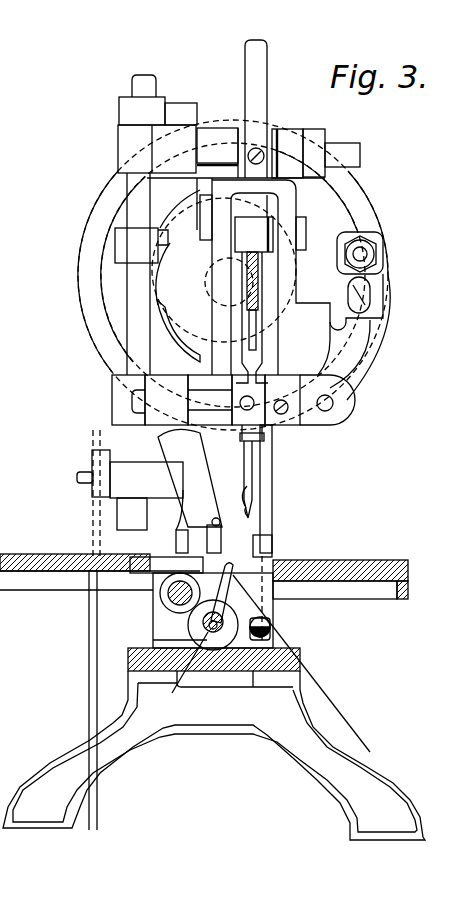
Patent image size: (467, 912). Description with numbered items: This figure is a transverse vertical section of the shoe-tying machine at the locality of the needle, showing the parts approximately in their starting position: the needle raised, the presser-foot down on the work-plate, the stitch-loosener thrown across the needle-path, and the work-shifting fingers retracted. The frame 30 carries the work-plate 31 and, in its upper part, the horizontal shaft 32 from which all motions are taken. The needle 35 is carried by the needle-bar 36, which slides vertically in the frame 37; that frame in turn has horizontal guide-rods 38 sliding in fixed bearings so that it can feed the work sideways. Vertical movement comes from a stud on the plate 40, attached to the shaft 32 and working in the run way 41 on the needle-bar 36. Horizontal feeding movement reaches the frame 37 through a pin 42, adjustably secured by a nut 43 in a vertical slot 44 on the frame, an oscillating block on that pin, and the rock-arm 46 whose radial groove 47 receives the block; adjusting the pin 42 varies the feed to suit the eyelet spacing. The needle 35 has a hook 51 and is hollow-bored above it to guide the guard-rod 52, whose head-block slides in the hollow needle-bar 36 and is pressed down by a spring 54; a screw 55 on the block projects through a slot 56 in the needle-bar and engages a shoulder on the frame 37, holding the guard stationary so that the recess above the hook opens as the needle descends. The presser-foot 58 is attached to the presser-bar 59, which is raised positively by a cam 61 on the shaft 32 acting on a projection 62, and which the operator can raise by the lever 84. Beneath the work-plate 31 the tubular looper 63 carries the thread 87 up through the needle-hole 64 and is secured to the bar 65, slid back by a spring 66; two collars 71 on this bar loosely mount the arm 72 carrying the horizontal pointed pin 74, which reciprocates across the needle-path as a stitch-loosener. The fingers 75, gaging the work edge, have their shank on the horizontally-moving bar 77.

The frame 30 is at (288, 692).
The work-plate 31 is at (147, 560).
The horizontal shaft 32 is at (240, 303).
The needle 35 is at (253, 470).
The needle-bar 36 is at (252, 62).
The frame 37 is at (286, 203).
The horizontal guide-rods 38 is at (219, 147).
The plate 40 is at (180, 273).
The guide or run way 41 is at (300, 227).
The pin 42 is at (361, 254).
The nut 43 is at (376, 258).
The vertical slot 44 is at (350, 320).
The rock-arm 46 is at (335, 372).
The radial groove 47 is at (345, 333).
The hook 51 is at (250, 506).
The guard-rod 52 is at (250, 492).
The spring 54 is at (236, 270).
The screw 55 is at (232, 298).
The slot 56 is at (222, 270).
The presser-foot 58 is at (117, 513).
The presser-bar 59 is at (133, 337).
The cam 61 is at (167, 315).
The projection 62 is at (175, 212).
The tubular looper 63 is at (233, 592).
The elongated slot or needle-hole 64 is at (296, 582).
The bar 65 is at (200, 625).
The spring 66 is at (272, 639).
The collars 71 is at (223, 640).
The arm 72 is at (181, 673).
The horizontal pointed pin 74 is at (262, 523).
The fingers 75 is at (267, 545).
The horizontally-moving bar 77 is at (163, 600).
The lever 84 is at (93, 463).
The thread 87 is at (352, 715).